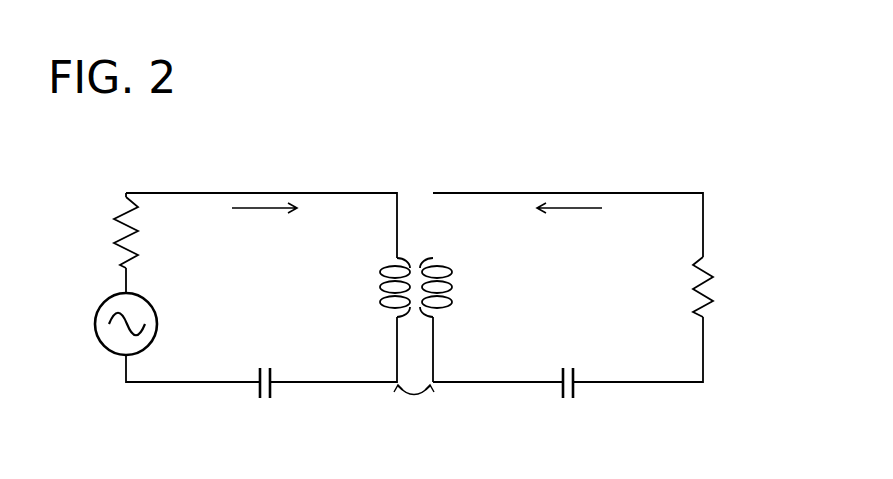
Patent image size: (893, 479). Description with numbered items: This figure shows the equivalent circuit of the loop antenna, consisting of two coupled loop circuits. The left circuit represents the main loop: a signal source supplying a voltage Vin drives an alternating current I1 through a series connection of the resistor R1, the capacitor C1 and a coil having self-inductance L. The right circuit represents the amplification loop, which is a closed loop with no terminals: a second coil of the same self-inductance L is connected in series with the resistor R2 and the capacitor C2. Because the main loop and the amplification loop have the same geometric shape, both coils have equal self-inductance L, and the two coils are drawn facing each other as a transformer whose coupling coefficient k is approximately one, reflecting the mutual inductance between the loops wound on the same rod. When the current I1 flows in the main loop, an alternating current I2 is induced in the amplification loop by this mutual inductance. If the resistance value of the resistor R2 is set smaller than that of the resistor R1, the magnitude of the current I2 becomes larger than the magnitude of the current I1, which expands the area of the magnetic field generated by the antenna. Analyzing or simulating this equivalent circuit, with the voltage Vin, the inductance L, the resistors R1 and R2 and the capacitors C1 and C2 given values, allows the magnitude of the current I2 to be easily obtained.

The resistor R1 is at (111, 232).
The voltage Vin is at (109, 324).
The alternating current I1 is at (264, 222).
The self-inductance L is at (415, 285).
The coupling coefficient k≈1 k is at (416, 403).
The capacitor C1 is at (267, 370).
The capacitor C2 is at (569, 370).
The alternating current I2 is at (569, 222).
The resistor R2 is at (717, 287).